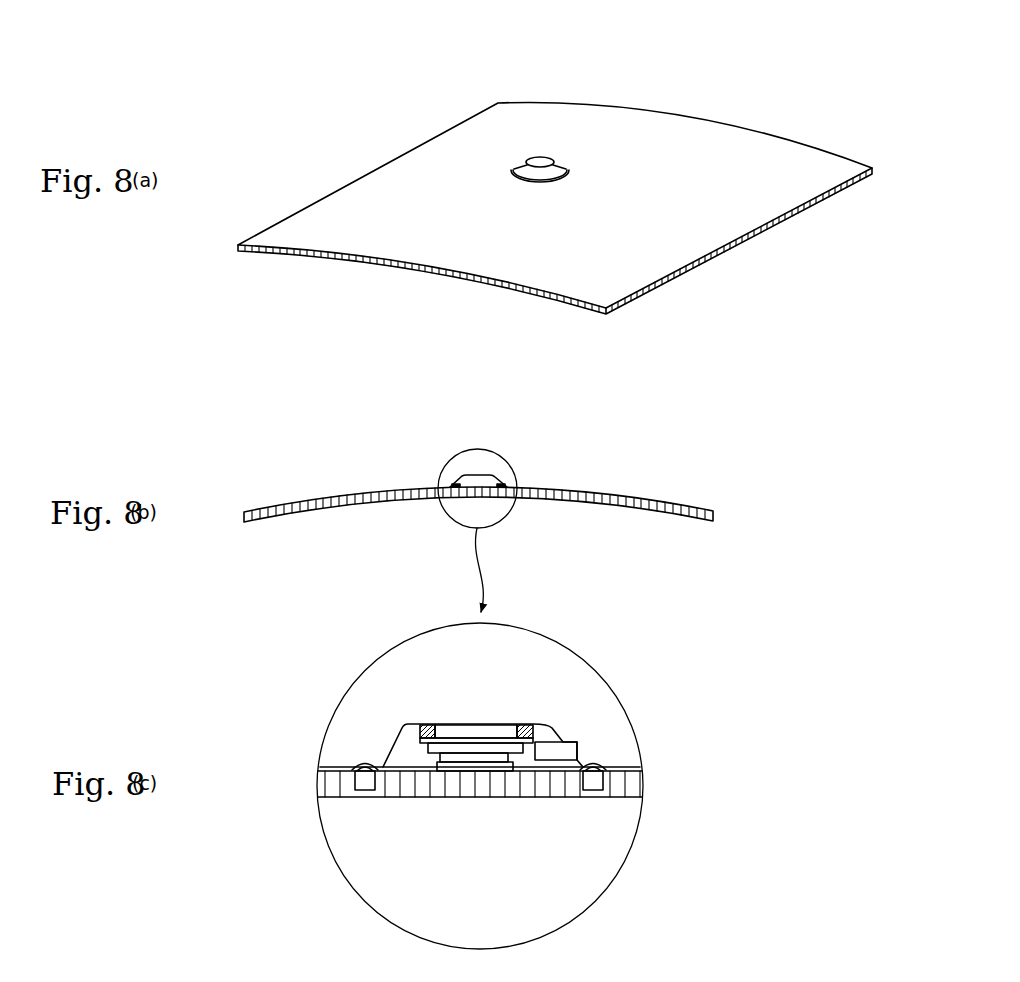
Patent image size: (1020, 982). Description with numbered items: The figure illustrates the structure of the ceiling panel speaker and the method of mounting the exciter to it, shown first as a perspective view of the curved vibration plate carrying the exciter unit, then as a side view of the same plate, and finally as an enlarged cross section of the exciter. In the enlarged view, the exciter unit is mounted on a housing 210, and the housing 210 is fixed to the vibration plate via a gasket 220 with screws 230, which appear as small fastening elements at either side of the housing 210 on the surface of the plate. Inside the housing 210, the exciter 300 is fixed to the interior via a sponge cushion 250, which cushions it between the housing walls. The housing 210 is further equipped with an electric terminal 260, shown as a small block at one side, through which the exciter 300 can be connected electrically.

The housing 210 is at (390, 748).
The gasket 220 is at (603, 768).
The screws 230 is at (357, 761).
The sponge cushion 250 is at (530, 726).
The electric terminal 260 is at (576, 743).
The exciter 300 is at (492, 727).